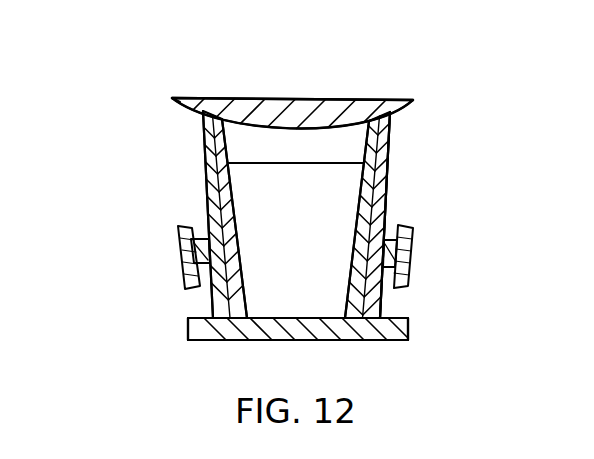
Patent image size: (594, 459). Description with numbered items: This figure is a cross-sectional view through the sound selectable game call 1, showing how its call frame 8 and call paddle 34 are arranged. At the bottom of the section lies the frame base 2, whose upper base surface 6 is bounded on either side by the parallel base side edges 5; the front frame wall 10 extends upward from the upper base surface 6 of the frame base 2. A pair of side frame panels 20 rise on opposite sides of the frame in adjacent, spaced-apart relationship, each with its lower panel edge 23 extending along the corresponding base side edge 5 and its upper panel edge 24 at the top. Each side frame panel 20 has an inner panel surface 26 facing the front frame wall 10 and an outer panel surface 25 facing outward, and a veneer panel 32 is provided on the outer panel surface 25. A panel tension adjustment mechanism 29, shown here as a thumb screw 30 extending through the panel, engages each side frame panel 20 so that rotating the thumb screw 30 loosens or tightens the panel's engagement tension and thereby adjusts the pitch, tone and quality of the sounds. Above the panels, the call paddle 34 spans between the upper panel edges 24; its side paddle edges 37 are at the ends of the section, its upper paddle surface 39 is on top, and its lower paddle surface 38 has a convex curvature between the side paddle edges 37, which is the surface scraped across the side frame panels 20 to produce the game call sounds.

The sound selectable game call 1 is at (124, 61).
The frame base 2 is at (168, 342).
The base side edges 5 is at (188, 322).
The upper base surface 6 is at (308, 317).
The call frame 8 is at (433, 130).
The front frame wall 10 is at (293, 180).
The side frame panels 20 is at (190, 166).
The lower panel edge 23 is at (243, 341).
The upper panel edge 24 is at (210, 116).
The outer panel surface 25 is at (198, 185).
The inner panel surface 26 is at (356, 224).
The panel tension adjustment mechanism 29 is at (300, 258).
The thumb screw 30 is at (178, 268).
The veneer panel 32 is at (200, 294).
The call paddle 34 is at (238, 83).
The side paddle edges 37 is at (172, 99).
The lower paddle surface 38 is at (204, 120).
The upper paddle surface 39 is at (317, 97).